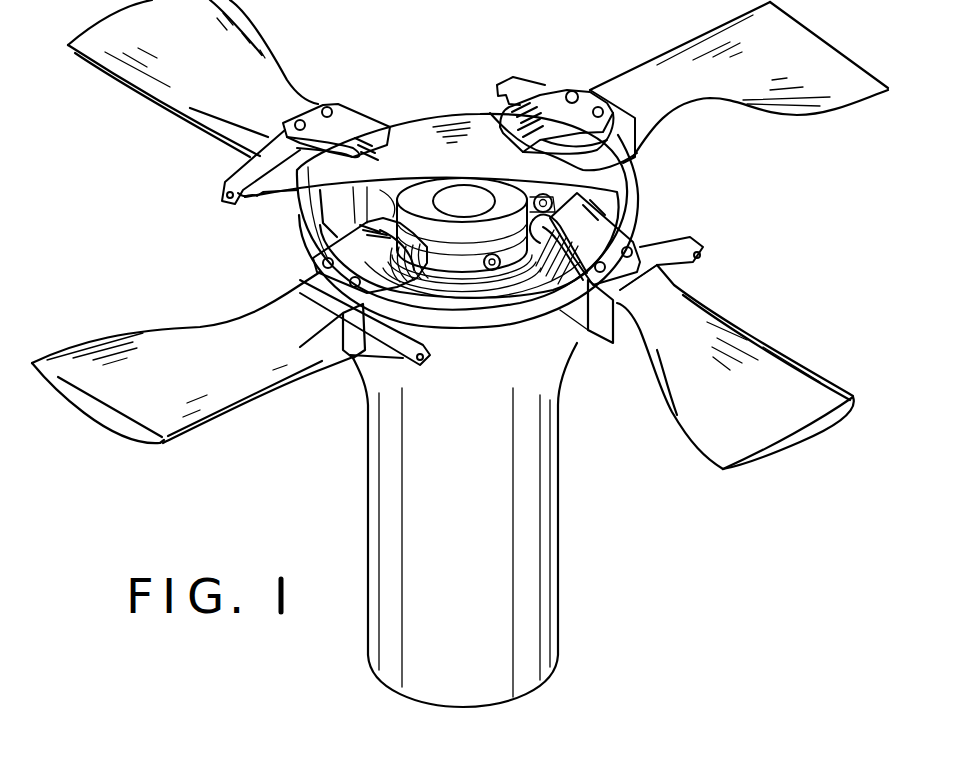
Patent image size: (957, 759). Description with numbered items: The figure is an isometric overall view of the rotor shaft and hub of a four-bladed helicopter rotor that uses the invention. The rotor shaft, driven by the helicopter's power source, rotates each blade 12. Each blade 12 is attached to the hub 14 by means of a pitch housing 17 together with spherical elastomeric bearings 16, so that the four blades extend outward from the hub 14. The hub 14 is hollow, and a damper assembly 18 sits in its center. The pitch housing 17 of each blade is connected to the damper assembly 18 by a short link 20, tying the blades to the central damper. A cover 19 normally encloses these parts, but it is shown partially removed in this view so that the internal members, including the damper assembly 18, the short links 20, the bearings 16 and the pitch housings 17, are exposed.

The blade 12 is at (147, 340).
The hub 14 is at (627, 217).
The spherical elastomeric bearings 16 is at (533, 250).
The pitch housing 17 is at (315, 258).
The damper assembly 18 is at (424, 193).
The cover 19 is at (637, 178).
The short link 20 is at (493, 273).